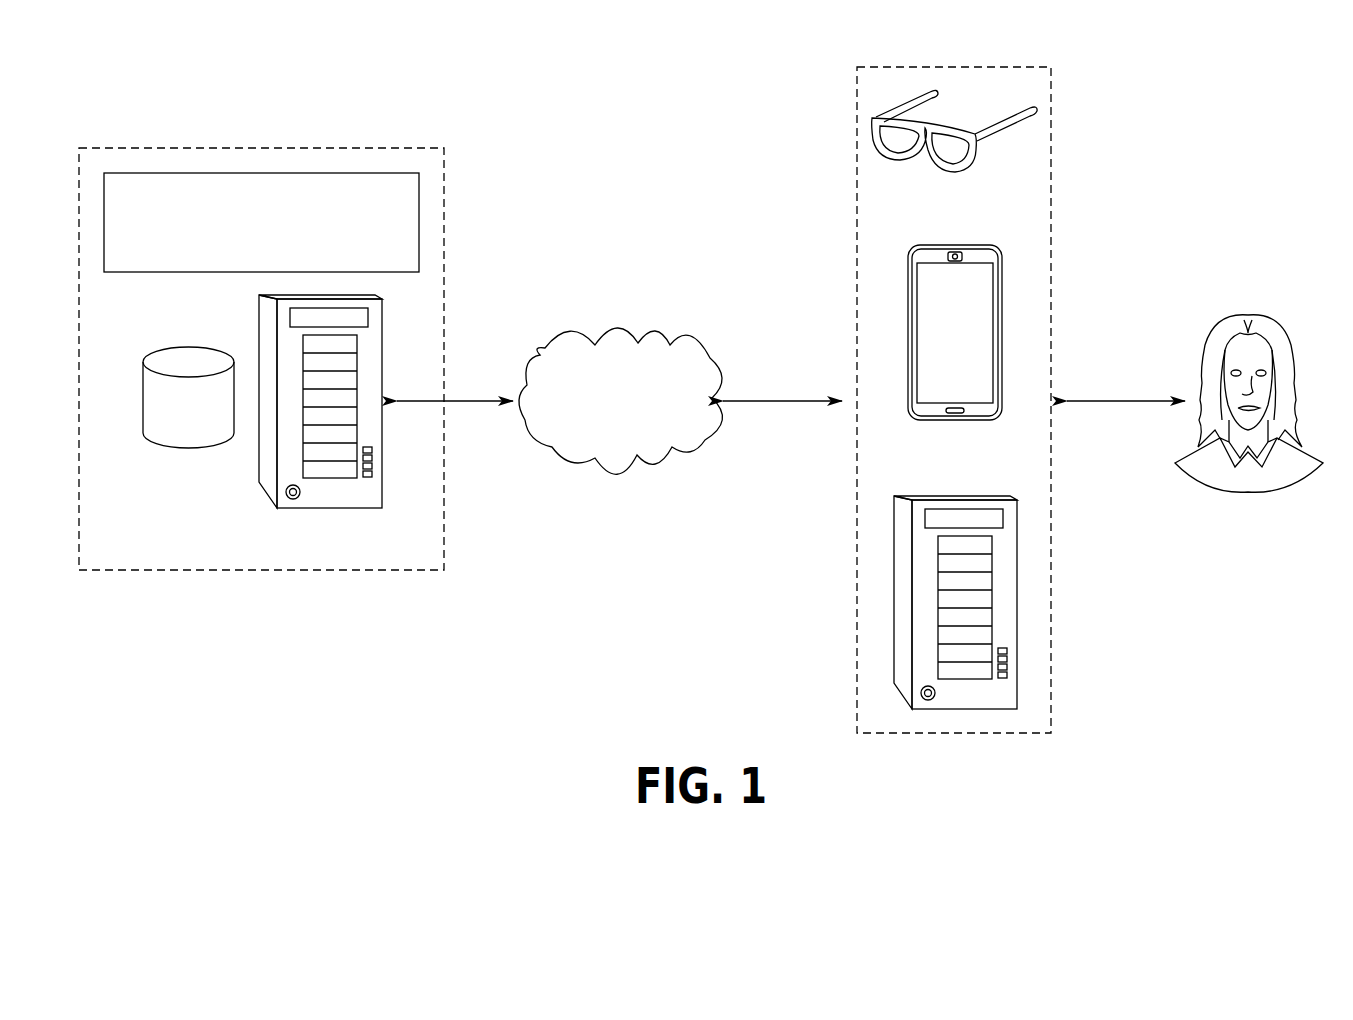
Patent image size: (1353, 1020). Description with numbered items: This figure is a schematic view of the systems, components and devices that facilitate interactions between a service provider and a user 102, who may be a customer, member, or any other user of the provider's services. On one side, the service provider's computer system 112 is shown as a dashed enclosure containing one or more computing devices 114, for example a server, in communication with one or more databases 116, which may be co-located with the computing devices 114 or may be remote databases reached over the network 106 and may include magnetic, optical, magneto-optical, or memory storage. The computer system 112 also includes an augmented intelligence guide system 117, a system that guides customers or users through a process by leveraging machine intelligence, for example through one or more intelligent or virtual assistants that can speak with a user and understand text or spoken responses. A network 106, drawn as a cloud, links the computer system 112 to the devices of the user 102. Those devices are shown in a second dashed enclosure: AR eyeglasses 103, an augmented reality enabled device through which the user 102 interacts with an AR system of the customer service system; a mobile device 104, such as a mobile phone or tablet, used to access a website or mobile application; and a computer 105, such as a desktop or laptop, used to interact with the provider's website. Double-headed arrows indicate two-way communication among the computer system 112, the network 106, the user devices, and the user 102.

The user 102 is at (1248, 310).
The AR eyeglasses 103 is at (1002, 128).
The mobile device 104 is at (1003, 333).
The computer 105 is at (1017, 588).
The network 106 is at (615, 328).
The computer system 112 is at (180, 148).
The computing devices 114 is at (259, 330).
The databases 116 is at (188, 448).
The augmented intelligence guide system 117 is at (419, 226).